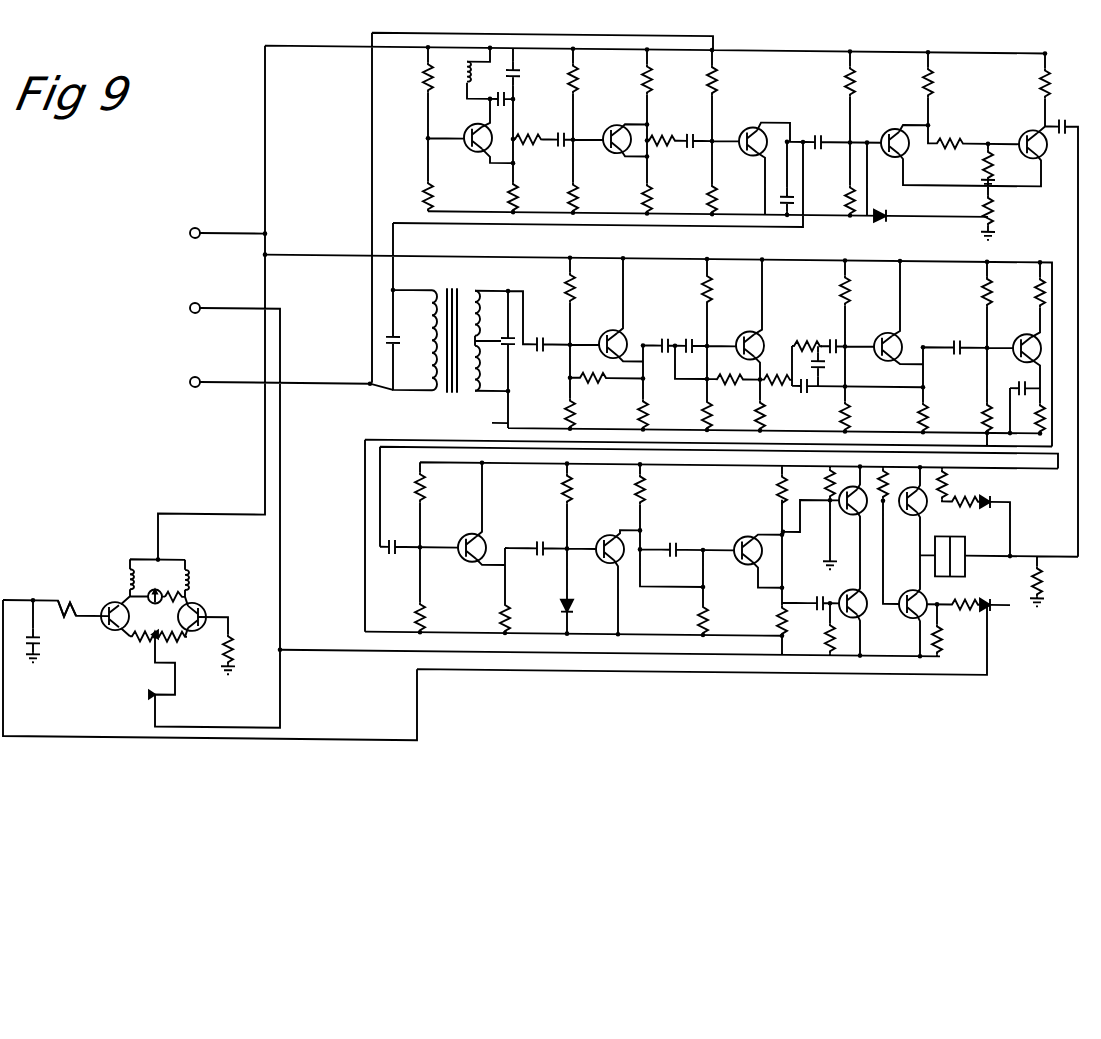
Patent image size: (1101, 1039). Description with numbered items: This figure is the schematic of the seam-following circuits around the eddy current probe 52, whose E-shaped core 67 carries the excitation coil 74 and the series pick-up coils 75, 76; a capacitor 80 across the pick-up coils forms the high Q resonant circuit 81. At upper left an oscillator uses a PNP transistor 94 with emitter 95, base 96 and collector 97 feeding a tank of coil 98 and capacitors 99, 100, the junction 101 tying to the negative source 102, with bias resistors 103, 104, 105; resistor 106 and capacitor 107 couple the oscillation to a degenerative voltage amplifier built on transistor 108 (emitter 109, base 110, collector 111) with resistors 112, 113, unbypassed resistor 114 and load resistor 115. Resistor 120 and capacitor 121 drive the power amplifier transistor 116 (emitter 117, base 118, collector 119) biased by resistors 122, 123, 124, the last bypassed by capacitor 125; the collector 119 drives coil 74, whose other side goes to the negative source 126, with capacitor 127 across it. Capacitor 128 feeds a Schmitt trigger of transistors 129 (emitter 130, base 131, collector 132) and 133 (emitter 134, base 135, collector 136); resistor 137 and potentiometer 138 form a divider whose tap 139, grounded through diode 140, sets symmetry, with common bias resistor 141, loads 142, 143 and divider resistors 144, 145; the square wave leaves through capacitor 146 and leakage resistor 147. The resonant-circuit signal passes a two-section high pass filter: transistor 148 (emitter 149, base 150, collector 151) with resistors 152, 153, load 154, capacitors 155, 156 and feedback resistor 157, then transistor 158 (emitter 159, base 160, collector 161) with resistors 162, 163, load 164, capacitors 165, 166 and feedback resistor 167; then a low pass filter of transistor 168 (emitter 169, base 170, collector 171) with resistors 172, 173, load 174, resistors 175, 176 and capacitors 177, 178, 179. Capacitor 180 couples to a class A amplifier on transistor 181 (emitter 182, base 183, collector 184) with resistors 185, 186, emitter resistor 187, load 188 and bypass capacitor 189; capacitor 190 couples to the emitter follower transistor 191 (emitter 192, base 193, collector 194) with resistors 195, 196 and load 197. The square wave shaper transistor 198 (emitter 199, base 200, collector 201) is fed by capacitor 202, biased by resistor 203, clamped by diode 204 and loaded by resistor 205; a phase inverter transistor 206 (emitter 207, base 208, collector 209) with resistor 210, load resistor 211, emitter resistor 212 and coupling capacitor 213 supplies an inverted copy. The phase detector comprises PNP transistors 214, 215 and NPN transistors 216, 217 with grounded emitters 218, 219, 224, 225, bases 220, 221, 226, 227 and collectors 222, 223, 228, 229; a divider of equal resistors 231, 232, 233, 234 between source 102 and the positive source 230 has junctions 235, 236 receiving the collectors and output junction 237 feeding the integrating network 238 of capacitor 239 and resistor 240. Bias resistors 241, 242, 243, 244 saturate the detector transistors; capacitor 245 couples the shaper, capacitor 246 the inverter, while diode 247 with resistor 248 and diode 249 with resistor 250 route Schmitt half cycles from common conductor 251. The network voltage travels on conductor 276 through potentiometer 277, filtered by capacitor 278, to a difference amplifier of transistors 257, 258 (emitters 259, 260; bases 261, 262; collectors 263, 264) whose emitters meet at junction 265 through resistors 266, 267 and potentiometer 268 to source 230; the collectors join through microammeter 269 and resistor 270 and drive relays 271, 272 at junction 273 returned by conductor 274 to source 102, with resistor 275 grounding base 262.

The eddy current probe 52 is at (444, 274).
The E-shaped core 67 is at (446, 390).
The excitation coil 74 is at (428, 308).
The pick-up coil 75 is at (483, 304).
The pick-up coil 76 is at (478, 366).
The capacitor 80 is at (501, 334).
The resonant circuit 81 is at (488, 284).
The PNP transistor 94 is at (475, 144).
The emitter 95 is at (478, 152).
The base 96 is at (467, 151).
The collector 97 is at (468, 125).
The coil 98 is at (466, 93).
The capacitor 99 is at (503, 101).
The capacitor 100 is at (516, 66).
The junction 101 is at (482, 78).
The source of negative D.C. potential 102 is at (200, 227).
The bias resistor 103 is at (423, 75).
The bias resistor 104 is at (422, 197).
The bias resistor 105 is at (508, 197).
The resistor 106 is at (530, 140).
The capacitor 107 is at (565, 142).
The PNP transistor 108 is at (617, 143).
The emitter 109 is at (622, 146).
The base 110 is at (608, 143).
The collector 111 is at (608, 120).
The resistor 112 is at (578, 74).
The resistor 113 is at (525, 199).
The resistor 114 is at (632, 197).
The resistor 115 is at (651, 74).
The PNP transistor 116 is at (746, 140).
The emitter 117 is at (750, 142).
The base 118 is at (741, 116).
The collector 119 is at (751, 118).
The resistor 120 is at (690, 138).
The capacitor 121 is at (678, 125).
The resistor 122 is at (717, 74).
The resistor 123 is at (706, 199).
The resistor 124 is at (760, 198).
The capacitor 125 is at (800, 186).
The source of negative potential 126 is at (200, 376).
The capacitor 127 is at (400, 346).
The capacitor 128 is at (818, 142).
The PNP transistor 129 is at (897, 117).
The emitter 130 is at (880, 170).
The base 131 is at (884, 126).
The collector 132 is at (896, 112).
The PNP transistor 133 is at (1002, 184).
The emitter 134 is at (1003, 165).
The base 135 is at (1019, 134).
The collector 136 is at (1026, 124).
The resistor 137 is at (844, 75).
The potentiometer 138 is at (846, 196).
The tap 139 is at (886, 198).
The diode 140 is at (883, 208).
The common bias resistor 141 is at (995, 205).
The resistor 142 is at (1038, 76).
The resistor 143 is at (933, 74).
The resistor 144 is at (940, 132).
The resistor 145 is at (984, 155).
The capacitor 146 is at (1074, 106).
The leakage resistor 147 is at (1040, 572).
The PNP transistor 148 is at (626, 334).
The emitter 149 is at (613, 350).
The base 150 is at (606, 324).
The collector 151 is at (610, 316).
The resistor 152 is at (566, 274).
The resistor 153 is at (565, 404).
The resistor 154 is at (630, 404).
The capacitor 155 is at (530, 348).
The capacitor 156 is at (540, 332).
The feedback resistor 157 is at (602, 387).
The PNP transistor 158 is at (754, 353).
The emitter 159 is at (756, 330).
The base 160 is at (744, 326).
The collector 161 is at (749, 316).
The resistor 162 is at (702, 274).
The resistor 163 is at (701, 404).
The resistor 164 is at (754, 402).
The capacitor 165 is at (671, 336).
The capacitor 166 is at (695, 300).
The feedback resistor 167 is at (729, 376).
The PNP transistor 168 is at (882, 350).
The emitter 169 is at (876, 348).
The base 170 is at (876, 324).
The collector 171 is at (888, 318).
The resistor 172 is at (857, 272).
The resistor 173 is at (840, 400).
The resistor 174 is at (916, 406).
The resistor 175 is at (792, 382).
The resistor 176 is at (805, 308).
The capacitor 177 is at (812, 397).
The capacitor 178 is at (828, 320).
The capacitor 179 is at (812, 366).
The capacitor 180 is at (962, 330).
The PNP transistor 181 is at (1025, 350).
The emitter 182 is at (1019, 348).
The base 183 is at (1016, 332).
The collector 184 is at (1030, 324).
The resistor 185 is at (981, 281).
The resistor 186 is at (982, 406).
The emitter resistor 187 is at (1034, 432).
The resistor 188 is at (1036, 280).
The capacitor 189 is at (1010, 394).
The capacitor 190 is at (390, 550).
The PNP transistor 191 is at (468, 556).
The emitter 192 is at (463, 554).
The base 193 is at (460, 528).
The collector 194 is at (468, 520).
The resistor 195 is at (416, 484).
The resistor 196 is at (412, 604).
The resistor 197 is at (498, 602).
The PNP transistor 198 is at (607, 556).
The emitter 199 is at (604, 554).
The base 200 is at (601, 530).
The collector 201 is at (609, 524).
The capacitor 202 is at (543, 530).
The resistor 203 is at (561, 486).
The diode 204 is at (562, 594).
The resistor 205 is at (645, 484).
The PNP transistor 206 is at (748, 560).
The emitter 207 is at (770, 538).
The base 208 is at (739, 530).
The collector 209 is at (746, 524).
The resistor 210 is at (702, 606).
The load resistor 211 is at (778, 482).
The emitter resistor 212 is at (778, 602).
The capacitor 213 is at (676, 533).
The PNP transistor 214 is at (846, 506).
The PNP transistor 215 is at (922, 536).
The NPN transistor 216 is at (847, 641).
The NPN transistor 217 is at (924, 641).
The emitter 218 is at (843, 499).
The emitter 219 is at (927, 504).
The base 220 is at (852, 492).
The base 221 is at (968, 497).
The collector 222 is at (849, 476).
The collector 223 is at (916, 493).
The emitter 224 is at (842, 580).
The emitter 225 is at (922, 571).
The base 226 is at (814, 580).
The base 227 is at (953, 602).
The collector 228 is at (859, 616).
The collector 229 is at (909, 617).
The source of positive D.C. potential 230 is at (200, 302).
The resistor 231 is at (895, 477).
The resistor 232 is at (889, 552).
The resistor 233 is at (850, 565).
The resistor 234 is at (878, 650).
The junction 235 is at (889, 536).
The junction 236 is at (884, 571).
The junction 237 is at (1010, 538).
The integrating network 238 is at (935, 556).
The capacitor 239 is at (987, 553).
The resistor 240 is at (987, 537).
The resistor 241 is at (816, 470).
The resistor 242 is at (947, 477).
The resistor 243 is at (770, 636).
The resistor 244 is at (939, 636).
The capacitor 245 is at (818, 602).
The capacitor 246 is at (784, 484).
The diode 247 is at (975, 486).
The current limiting resistor 248 is at (976, 500).
The diode 249 is at (1006, 628).
The current limiting resistor 250 is at (980, 612).
The common conductor 251 is at (1020, 544).
The PNP transistor 257 is at (114, 630).
The PNP transistor 258 is at (192, 584).
The emitter 259 is at (110, 630).
The emitter 260 is at (192, 630).
The base 261 is at (98, 622).
The base 262 is at (214, 605).
The collector 263 is at (124, 580).
The collector 264 is at (185, 596).
The junction 265 is at (154, 646).
The current limiting resistor 266 is at (138, 640).
The current limiting resistor 267 is at (164, 638).
The potentiometer 268 is at (148, 697).
The microammeter 269 is at (158, 613).
The current limiting resistor 270 is at (168, 580).
The sensitive relay 271 is at (125, 568).
The sensitive relay 272 is at (191, 568).
The common junction 273 is at (160, 558).
The conductor 274 is at (180, 516).
The current limiting resistor 275 is at (231, 664).
The conductor 276 is at (614, 665).
The potentiometer 277 is at (68, 600).
The filter capacitor 278 is at (34, 654).